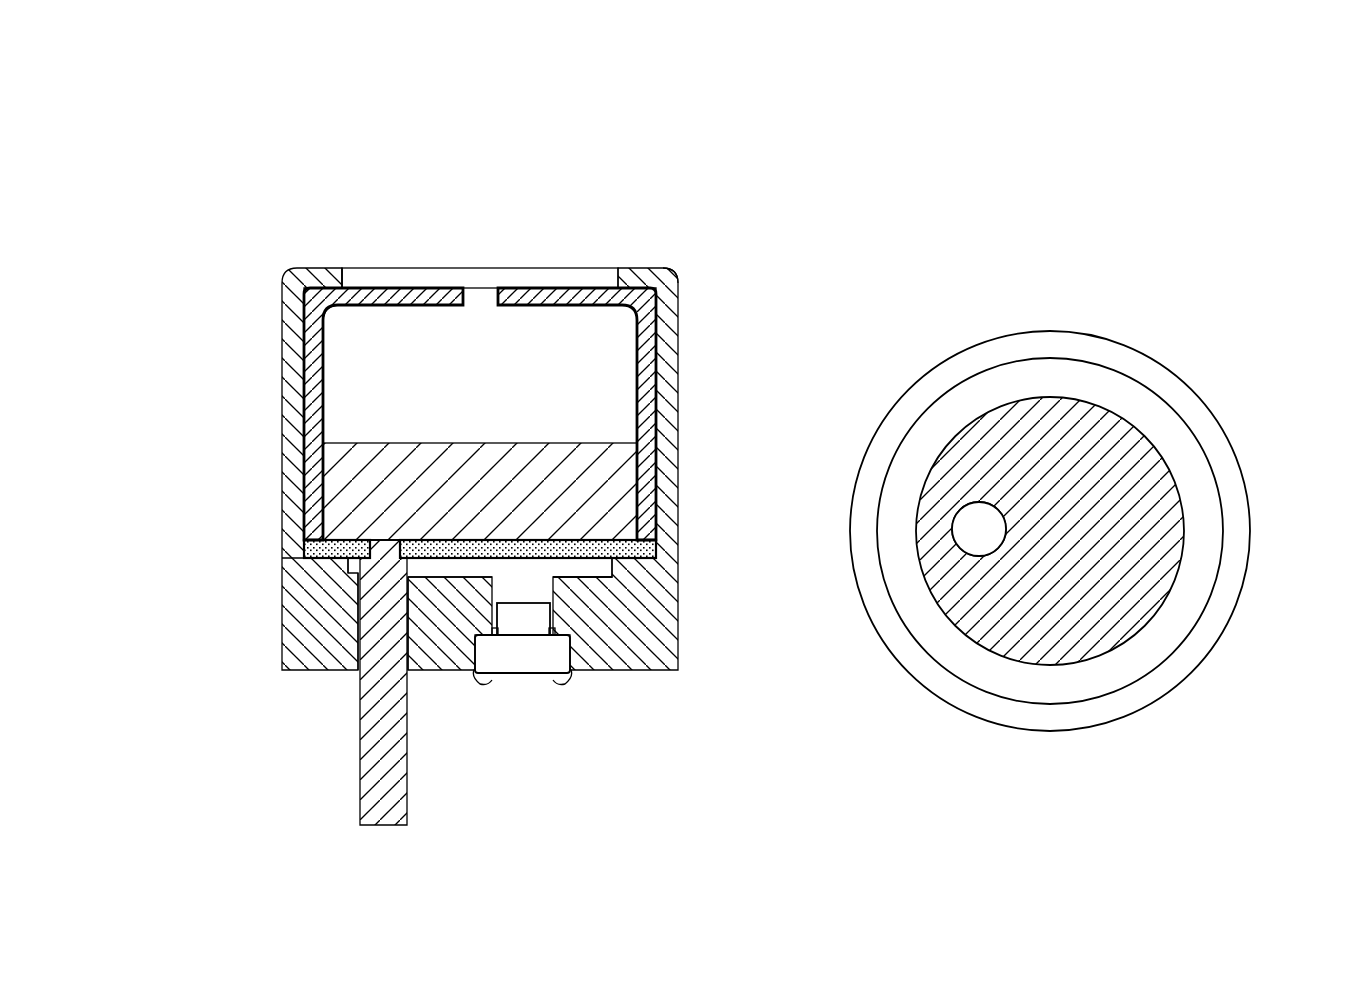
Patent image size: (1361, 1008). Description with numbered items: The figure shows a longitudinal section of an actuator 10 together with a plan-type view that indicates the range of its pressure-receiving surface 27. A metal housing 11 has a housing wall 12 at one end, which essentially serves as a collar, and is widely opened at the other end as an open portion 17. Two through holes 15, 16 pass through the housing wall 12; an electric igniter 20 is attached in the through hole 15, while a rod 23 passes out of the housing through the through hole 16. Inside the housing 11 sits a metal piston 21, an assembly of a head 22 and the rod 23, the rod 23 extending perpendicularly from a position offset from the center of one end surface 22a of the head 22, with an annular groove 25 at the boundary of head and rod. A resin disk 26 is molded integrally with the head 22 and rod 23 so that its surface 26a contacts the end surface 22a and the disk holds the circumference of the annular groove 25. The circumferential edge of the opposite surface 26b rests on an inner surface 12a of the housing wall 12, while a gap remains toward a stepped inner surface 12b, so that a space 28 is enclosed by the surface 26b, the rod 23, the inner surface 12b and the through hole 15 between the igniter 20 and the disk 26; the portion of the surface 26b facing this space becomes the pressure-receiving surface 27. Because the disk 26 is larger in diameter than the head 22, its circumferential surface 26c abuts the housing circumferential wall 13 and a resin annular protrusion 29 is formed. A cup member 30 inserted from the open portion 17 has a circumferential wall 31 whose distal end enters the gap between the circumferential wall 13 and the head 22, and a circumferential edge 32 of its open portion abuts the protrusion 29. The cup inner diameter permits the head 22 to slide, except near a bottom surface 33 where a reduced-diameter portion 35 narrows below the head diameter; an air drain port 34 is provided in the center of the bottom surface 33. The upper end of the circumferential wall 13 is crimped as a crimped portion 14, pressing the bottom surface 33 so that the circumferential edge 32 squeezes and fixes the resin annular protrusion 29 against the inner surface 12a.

The actuator 10 is at (561, 237).
The housing 11 is at (683, 357).
The housing wall 12 is at (650, 637).
The inner surface of housing wall 12a is at (637, 542).
The stepped inner surface 12b is at (613, 580).
The housing circumferential wall 13 is at (295, 416).
The crimped portion 14 is at (332, 278).
The through hole 15 is at (555, 675).
The through hole 16 is at (355, 672).
The open portion 17 is at (372, 278).
The electric igniter 20 is at (522, 665).
The piston 21 is at (568, 444).
The head 22 is at (533, 463).
The end surface of head 22a is at (440, 540).
The rod 23 is at (362, 795).
The annular groove 25 is at (362, 540).
The resin disk 26 is at (487, 545).
The surface of resin disk 26a is at (590, 540).
The surface of resin disk 26b is at (473, 558).
The circumferential surface of resin disk 26c is at (305, 552).
The pressure-receiving surface 27 is at (1063, 530).
The space 28 is at (511, 594).
The resin annular protrusion 29 is at (300, 575).
The cup member 30 is at (665, 270).
The circumferential wall 31 is at (645, 402).
The circumferential edge of open portion 32 is at (305, 545).
The bottom surface 33 is at (418, 290).
The air drain port 34 is at (480, 287).
The reduced-diameter portion 35 is at (330, 340).